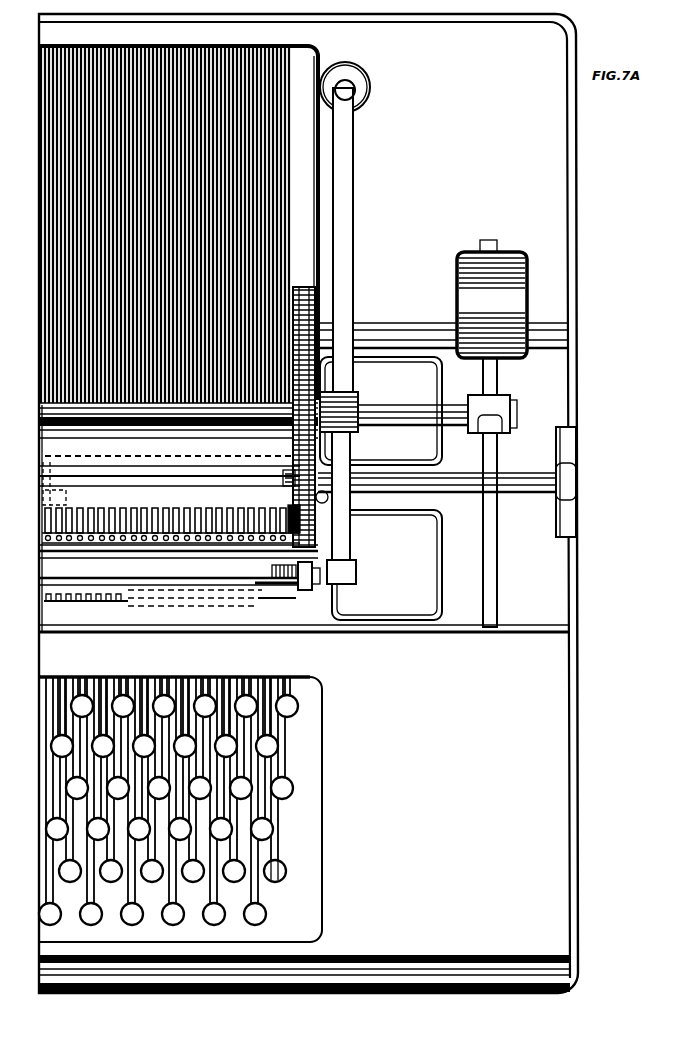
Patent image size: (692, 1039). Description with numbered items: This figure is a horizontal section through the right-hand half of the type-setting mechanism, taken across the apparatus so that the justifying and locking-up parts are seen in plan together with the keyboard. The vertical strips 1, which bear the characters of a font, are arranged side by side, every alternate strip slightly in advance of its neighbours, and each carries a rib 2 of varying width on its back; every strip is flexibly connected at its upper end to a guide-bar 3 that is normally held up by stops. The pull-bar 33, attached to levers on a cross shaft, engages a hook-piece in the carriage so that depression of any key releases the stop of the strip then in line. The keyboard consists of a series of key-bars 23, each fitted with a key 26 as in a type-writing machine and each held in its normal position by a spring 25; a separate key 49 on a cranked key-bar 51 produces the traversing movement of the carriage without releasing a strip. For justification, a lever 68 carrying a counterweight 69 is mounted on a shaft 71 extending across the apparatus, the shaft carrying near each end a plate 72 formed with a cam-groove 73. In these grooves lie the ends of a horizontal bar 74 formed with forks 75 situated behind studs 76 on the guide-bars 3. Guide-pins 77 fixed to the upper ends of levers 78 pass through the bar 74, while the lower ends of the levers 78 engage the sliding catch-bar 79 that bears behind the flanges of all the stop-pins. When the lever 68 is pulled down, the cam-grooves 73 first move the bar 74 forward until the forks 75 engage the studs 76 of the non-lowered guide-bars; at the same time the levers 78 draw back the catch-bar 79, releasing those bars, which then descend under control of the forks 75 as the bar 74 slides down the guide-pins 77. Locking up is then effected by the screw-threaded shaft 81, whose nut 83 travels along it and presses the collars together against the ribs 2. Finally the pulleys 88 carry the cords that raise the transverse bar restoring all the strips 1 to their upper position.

The spring 25 is at (165, 225).
The pulleys 88 is at (320, 308).
The counterweight 69 is at (492, 299).
The shaft 71 is at (451, 402).
The plate 72 is at (352, 455).
The cam-groove 73 is at (387, 565).
The lever 68 is at (498, 558).
The pull-bar 33 is at (170, 461).
The sliding catch-bar 79 is at (97, 479).
The levers 78 is at (272, 473).
The horizontal bar 74 is at (171, 512).
The forks 75 is at (171, 517).
The guide-pins 77 is at (281, 512).
The studs 76 is at (179, 559).
The strips 1 is at (172, 601).
The rib 2 is at (195, 606).
The guide-bar 3 is at (193, 609).
The shaft 81 is at (193, 612).
The nut 83 is at (296, 586).
The key-bar 23 is at (282, 728).
The key 26 is at (285, 866).
The key-bar 51 is at (270, 891).
The key 49 is at (258, 926).